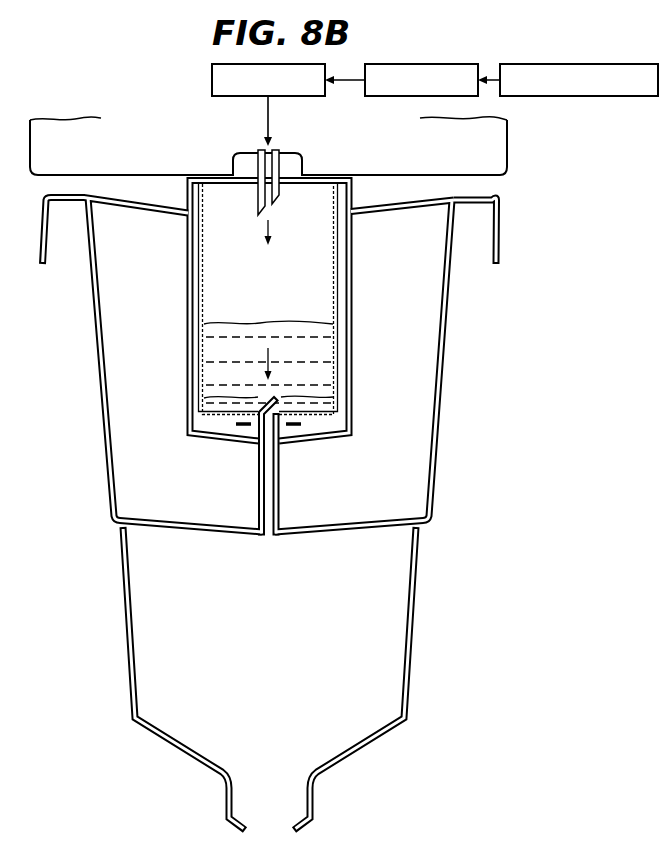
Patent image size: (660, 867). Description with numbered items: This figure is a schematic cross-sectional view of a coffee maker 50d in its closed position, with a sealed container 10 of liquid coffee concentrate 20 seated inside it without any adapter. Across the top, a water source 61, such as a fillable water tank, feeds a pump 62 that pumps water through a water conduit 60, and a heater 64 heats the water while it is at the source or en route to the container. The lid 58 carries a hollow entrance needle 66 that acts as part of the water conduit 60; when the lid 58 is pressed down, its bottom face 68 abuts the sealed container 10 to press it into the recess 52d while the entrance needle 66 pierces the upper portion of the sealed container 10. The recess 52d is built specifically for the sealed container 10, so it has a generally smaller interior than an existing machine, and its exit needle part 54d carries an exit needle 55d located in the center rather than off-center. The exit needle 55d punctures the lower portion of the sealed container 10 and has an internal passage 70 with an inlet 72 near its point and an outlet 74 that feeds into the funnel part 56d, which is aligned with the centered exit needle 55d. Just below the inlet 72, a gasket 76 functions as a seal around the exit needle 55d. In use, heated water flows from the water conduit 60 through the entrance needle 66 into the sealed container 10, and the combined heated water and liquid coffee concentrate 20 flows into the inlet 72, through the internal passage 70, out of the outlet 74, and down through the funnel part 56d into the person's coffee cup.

The sealed container 10 is at (137, 185).
The liquid coffee concentrate 20 is at (238, 331).
The coffee maker 50d is at (542, 146).
The recess 52d is at (332, 427).
The exit needle part 54d is at (441, 380).
The exit needle 55d is at (200, 394).
The funnel part 56d is at (408, 631).
The lid 58 is at (67, 124).
The water conduit 60 is at (270, 152).
The water source 61 is at (579, 63).
The pump 62 is at (421, 63).
The heater 64 is at (212, 80).
The entrance needle 66 is at (257, 208).
The bottom face 68 is at (500, 184).
The internal passage 70 is at (258, 488).
The inlet 72 is at (283, 402).
The outlet 74 is at (268, 530).
The gasket 76 is at (287, 426).